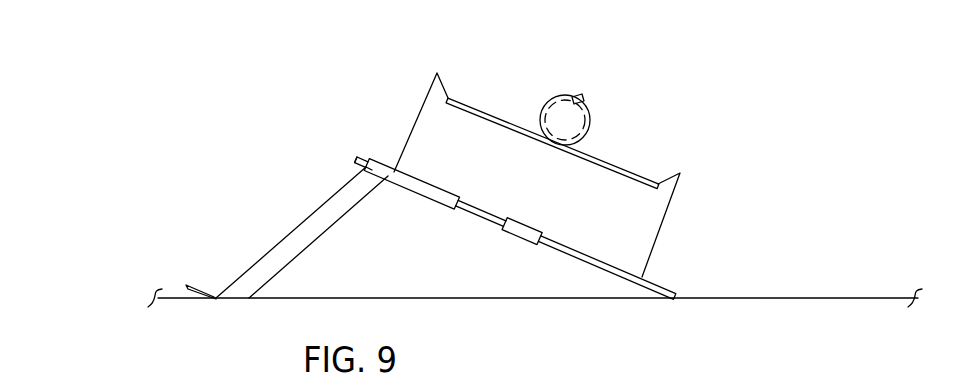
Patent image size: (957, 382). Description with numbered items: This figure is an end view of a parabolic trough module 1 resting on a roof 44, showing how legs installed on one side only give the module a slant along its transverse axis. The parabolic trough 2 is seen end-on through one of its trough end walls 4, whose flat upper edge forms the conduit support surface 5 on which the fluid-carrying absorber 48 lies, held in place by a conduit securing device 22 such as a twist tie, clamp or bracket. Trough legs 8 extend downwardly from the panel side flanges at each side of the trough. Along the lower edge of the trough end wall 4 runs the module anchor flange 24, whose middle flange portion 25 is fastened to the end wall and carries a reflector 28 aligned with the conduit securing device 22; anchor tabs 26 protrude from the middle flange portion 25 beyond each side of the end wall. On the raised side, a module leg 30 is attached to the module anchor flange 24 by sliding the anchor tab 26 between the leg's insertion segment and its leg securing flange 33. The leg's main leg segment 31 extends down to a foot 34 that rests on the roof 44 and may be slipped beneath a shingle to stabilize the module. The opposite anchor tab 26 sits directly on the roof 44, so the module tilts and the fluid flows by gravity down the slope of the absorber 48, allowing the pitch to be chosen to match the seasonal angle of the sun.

The parabolic trough module 1 is at (310, 59).
The parabolic trough 2 is at (690, 177).
The trough end wall 4 is at (566, 173).
The conduit support surface 5 is at (615, 162).
The trough leg 8 is at (424, 109).
The conduit securing device 22 is at (551, 105).
The module anchor flange 24 is at (516, 198).
The middle flange portion 25 is at (503, 218).
The anchor tab 26 is at (357, 157).
The reflector 28 is at (518, 226).
The module leg 30 is at (262, 233).
The main leg segment 31 is at (273, 249).
The leg securing flange 33 is at (399, 178).
The foot 34 is at (186, 286).
The roof 44 is at (835, 295).
The absorber 48 is at (544, 110).